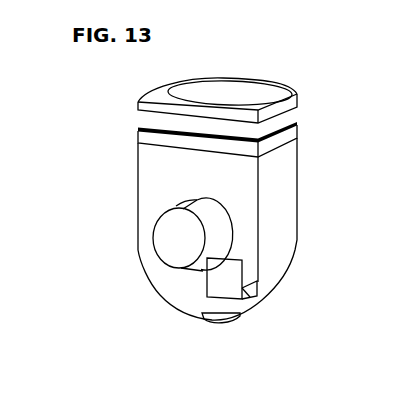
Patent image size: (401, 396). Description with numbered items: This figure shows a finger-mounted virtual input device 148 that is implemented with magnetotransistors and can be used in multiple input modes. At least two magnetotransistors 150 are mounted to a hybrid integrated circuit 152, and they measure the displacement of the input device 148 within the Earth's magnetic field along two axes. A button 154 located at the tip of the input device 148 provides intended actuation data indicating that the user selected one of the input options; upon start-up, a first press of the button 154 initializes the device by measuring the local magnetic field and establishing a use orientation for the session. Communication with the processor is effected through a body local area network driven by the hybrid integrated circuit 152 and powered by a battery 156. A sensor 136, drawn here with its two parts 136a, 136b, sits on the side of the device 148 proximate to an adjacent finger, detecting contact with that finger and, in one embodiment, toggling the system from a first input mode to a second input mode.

The sensor 136 is at (187, 123).
The upper cap plate 136a is at (148, 122).
The lower cap plate 136b is at (150, 137).
The finger-mounted virtual input device 148 is at (173, 277).
The magnetotransistor 150 is at (257, 287).
The hybrid integrated circuit 152 is at (221, 288).
The button 154 is at (237, 325).
The battery 156 is at (162, 236).